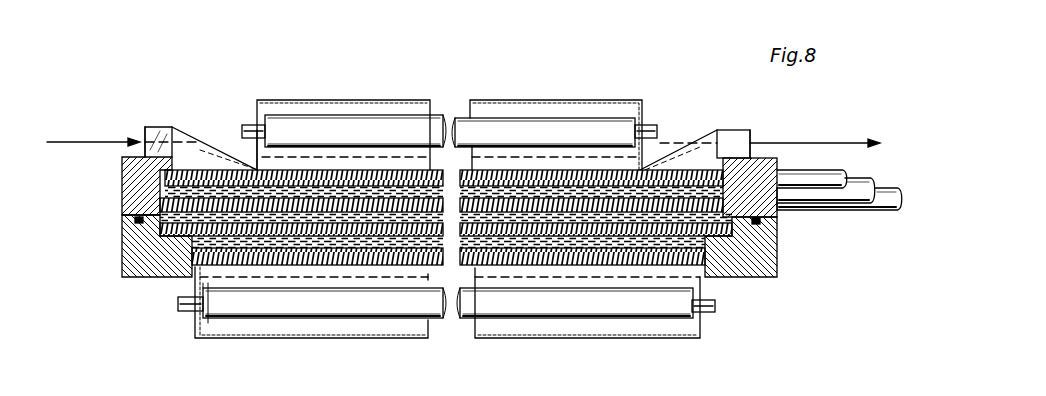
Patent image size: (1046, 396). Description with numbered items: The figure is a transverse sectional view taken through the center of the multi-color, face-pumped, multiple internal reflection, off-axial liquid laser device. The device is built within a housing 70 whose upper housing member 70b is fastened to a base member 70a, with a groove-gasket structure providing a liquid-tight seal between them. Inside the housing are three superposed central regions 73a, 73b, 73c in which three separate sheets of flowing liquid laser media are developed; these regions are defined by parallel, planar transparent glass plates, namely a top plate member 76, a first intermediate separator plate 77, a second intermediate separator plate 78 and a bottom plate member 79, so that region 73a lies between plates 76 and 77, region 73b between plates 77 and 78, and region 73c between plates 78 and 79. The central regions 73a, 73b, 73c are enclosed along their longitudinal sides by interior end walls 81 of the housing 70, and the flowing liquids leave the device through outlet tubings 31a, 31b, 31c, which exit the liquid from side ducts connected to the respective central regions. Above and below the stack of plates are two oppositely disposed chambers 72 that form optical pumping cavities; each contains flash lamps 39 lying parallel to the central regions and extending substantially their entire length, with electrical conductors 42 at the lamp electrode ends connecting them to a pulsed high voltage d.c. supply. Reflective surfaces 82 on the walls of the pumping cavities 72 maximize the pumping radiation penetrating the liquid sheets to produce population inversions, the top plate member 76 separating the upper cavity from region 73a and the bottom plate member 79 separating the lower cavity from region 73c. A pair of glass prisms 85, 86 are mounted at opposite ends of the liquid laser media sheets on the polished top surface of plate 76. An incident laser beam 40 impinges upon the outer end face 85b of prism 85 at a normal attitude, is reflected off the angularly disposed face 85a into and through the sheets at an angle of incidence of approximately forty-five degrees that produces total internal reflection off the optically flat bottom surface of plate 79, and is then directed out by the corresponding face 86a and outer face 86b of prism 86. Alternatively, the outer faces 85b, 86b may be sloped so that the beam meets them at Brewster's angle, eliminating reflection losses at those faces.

The laser beam 40 is at (68, 142).
The housing 70 is at (770, 282).
The base member 70a is at (122, 262).
The upper housing member 70b is at (122, 183).
The glass prism 85 is at (148, 127).
The angularly disposed face 85a is at (188, 135).
The outer end face 85b is at (143, 140).
The glass prism 86 is at (740, 130).
The angularly disposed face 86a is at (706, 165).
The outer end face 86b is at (752, 133).
The top plate member 76 is at (290, 170).
The first intermediate separator plate 77 is at (537, 207).
The second intermediate separator plate 78 is at (555, 225).
The central region 73a is at (360, 205).
The central region 73b is at (372, 215).
The central region 73c is at (393, 240).
The interior end walls 81 is at (195, 177).
The chambers 72 is at (620, 100).
The reflective surfaces 82 is at (473, 107).
The flash lamps 39 is at (585, 120).
The electrical conductors 42 is at (247, 130).
The bottom plate member 79 is at (207, 300).
The tubing 31a is at (793, 205).
The tubing 31b is at (843, 213).
The tubing 31c is at (880, 212).